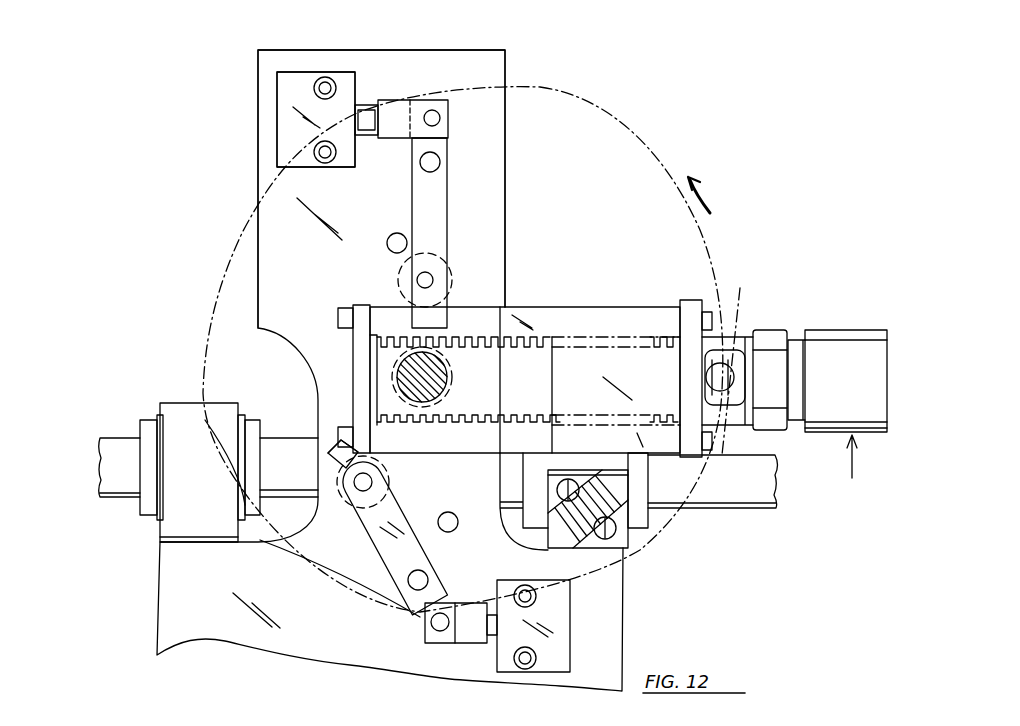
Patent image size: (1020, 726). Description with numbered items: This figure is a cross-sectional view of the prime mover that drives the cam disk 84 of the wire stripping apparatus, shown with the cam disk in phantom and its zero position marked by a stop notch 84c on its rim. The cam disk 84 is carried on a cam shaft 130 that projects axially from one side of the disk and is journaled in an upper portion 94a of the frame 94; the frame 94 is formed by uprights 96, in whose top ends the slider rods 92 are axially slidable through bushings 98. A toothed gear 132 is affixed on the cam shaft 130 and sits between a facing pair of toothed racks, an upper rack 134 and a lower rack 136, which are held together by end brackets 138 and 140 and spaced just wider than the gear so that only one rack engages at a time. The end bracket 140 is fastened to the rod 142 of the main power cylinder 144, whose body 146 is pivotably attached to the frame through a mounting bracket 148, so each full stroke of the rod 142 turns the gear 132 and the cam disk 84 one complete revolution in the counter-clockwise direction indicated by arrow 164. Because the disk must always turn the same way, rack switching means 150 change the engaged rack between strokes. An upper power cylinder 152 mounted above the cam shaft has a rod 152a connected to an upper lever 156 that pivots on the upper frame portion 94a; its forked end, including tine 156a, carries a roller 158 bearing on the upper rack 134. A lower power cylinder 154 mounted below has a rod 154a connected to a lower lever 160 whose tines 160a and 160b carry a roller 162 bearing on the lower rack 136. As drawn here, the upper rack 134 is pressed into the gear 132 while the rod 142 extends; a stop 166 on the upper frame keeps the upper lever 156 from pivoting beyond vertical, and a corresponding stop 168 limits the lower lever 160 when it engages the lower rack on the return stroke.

The cam disk 84 is at (600, 140).
The stop notch 84c is at (730, 363).
The slider rods 92 is at (115, 437).
The frame 94 is at (160, 620).
The upper portion of the frame 94a is at (453, 53).
The uprights 96 is at (173, 403).
The bushings 98 is at (140, 420).
The cam shaft 130 is at (456, 372).
The toothed gear 132 is at (408, 344).
The upper rack 134 is at (580, 306).
The lower rack 136 is at (455, 452).
The end bracket 138 is at (353, 307).
The end bracket 140 is at (690, 300).
The rod of main power cylinder 142 is at (742, 405).
The main power cylinder 144 is at (854, 469).
The body of main power cylinder 146 is at (863, 330).
The mounting bracket 148 is at (780, 330).
The rack switching means 150 is at (266, 84).
The upper power cylinder 152 is at (310, 72).
The upper rod 152a is at (363, 103).
The lower power cylinder 154 is at (572, 612).
The lower rod 154a is at (487, 648).
The upper lever 156 is at (447, 163).
The tine of upper lever 156a is at (450, 314).
The roller 158 is at (400, 272).
The lower lever 160 is at (373, 540).
The tine of lower lever 160a is at (320, 463).
The tine of lower lever 160b is at (338, 446).
The roller 162 is at (398, 490).
The arrow 164 is at (700, 195).
The stop 166 is at (397, 233).
The stop 168 is at (455, 533).